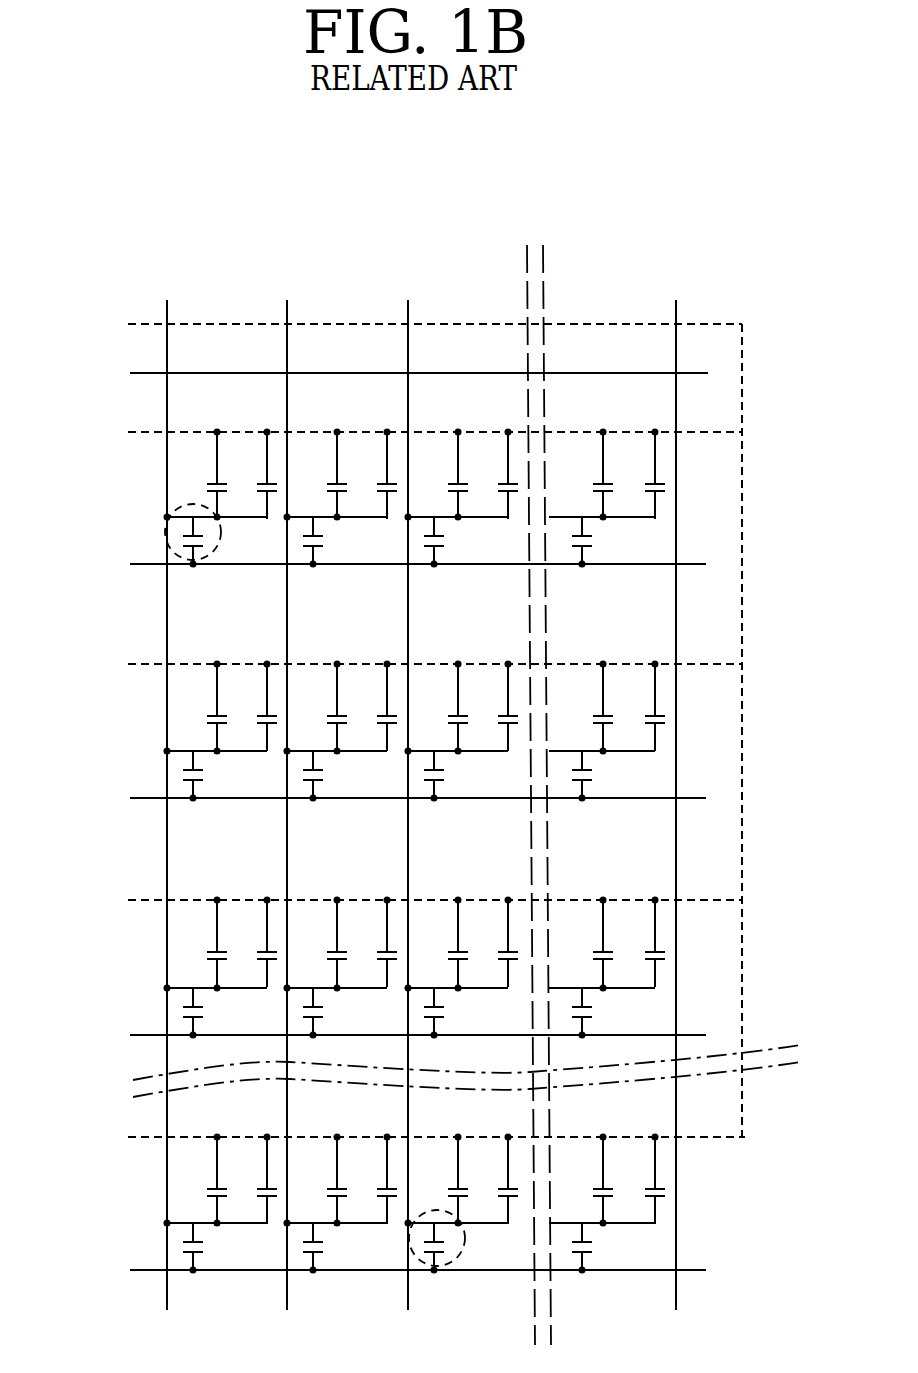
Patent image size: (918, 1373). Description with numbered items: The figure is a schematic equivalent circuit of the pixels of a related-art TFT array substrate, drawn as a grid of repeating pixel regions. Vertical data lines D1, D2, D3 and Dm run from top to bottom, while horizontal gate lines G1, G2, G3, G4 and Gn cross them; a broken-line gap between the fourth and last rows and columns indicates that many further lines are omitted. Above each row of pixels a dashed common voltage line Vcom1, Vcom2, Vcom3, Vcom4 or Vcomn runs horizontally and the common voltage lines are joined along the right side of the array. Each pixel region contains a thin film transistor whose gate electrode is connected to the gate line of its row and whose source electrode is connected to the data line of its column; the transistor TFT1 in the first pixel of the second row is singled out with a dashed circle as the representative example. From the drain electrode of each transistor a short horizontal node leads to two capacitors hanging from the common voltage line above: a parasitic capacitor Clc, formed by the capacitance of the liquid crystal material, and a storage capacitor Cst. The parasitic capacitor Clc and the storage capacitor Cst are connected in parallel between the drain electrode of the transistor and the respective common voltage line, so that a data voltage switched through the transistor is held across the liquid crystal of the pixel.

The data line D1 is at (167, 788).
The data line D2 is at (287, 788).
The data line D3 is at (408, 788).
The data line Dm is at (675, 788).
The gate line G1 is at (403, 376).
The gate line G2 is at (402, 567).
The gate line G3 is at (402, 801).
The gate line G4 is at (402, 1038).
The gate line Gn is at (404, 1270).
The common voltage line Vcom1 is at (403, 324).
The common voltage line Vcom2 is at (403, 432).
The common voltage line Vcom3 is at (403, 664).
The common voltage line Vcom4 is at (403, 900).
The common voltage line Vcomn is at (399, 1136).
The parasitic capacitor Clc is at (394, 827).
The storage capacitor Cst is at (445, 827).
The TFT TFT1 is at (189, 536).